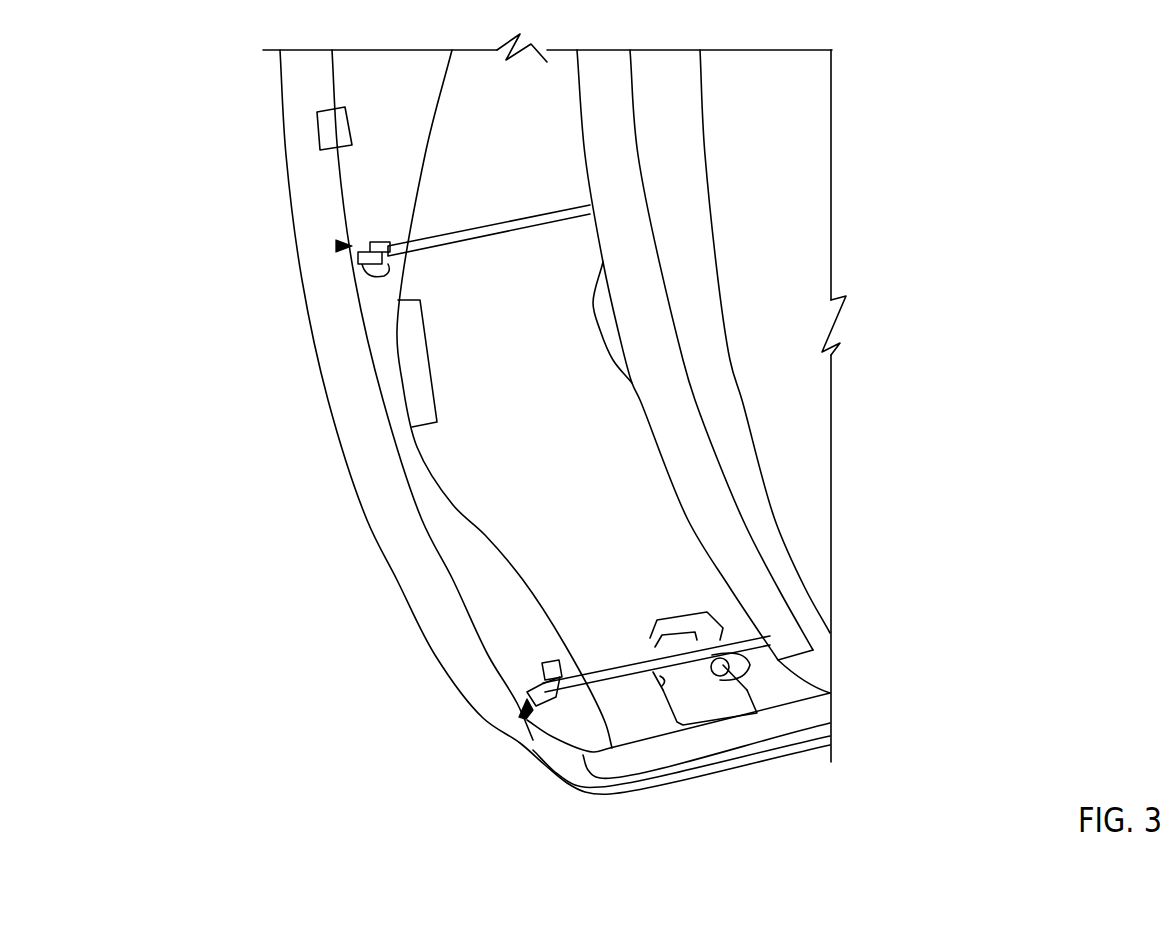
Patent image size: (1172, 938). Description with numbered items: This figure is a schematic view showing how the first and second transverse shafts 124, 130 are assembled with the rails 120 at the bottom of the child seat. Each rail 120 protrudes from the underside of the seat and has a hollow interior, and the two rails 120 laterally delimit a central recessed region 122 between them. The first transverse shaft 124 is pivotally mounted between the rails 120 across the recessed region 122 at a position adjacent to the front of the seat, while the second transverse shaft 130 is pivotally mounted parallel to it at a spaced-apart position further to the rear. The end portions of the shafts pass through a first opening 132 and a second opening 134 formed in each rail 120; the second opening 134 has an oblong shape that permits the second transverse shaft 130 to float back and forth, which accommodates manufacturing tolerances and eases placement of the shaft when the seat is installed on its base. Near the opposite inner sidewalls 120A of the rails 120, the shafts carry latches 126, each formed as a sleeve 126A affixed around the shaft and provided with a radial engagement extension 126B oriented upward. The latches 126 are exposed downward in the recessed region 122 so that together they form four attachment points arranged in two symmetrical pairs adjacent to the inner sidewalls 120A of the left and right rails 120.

The rail 120 is at (437, 607).
The inner sidewall 120A is at (373, 97).
The central recessed region 122 is at (492, 446).
The first transverse shaft 124 is at (617, 667).
The latch 126 is at (353, 263).
The sleeve 126A is at (527, 697).
The radial engagement extension 126B is at (542, 667).
The second transverse shaft 130 is at (420, 243).
The first opening 132 is at (527, 728).
The second opening 134 is at (338, 246).